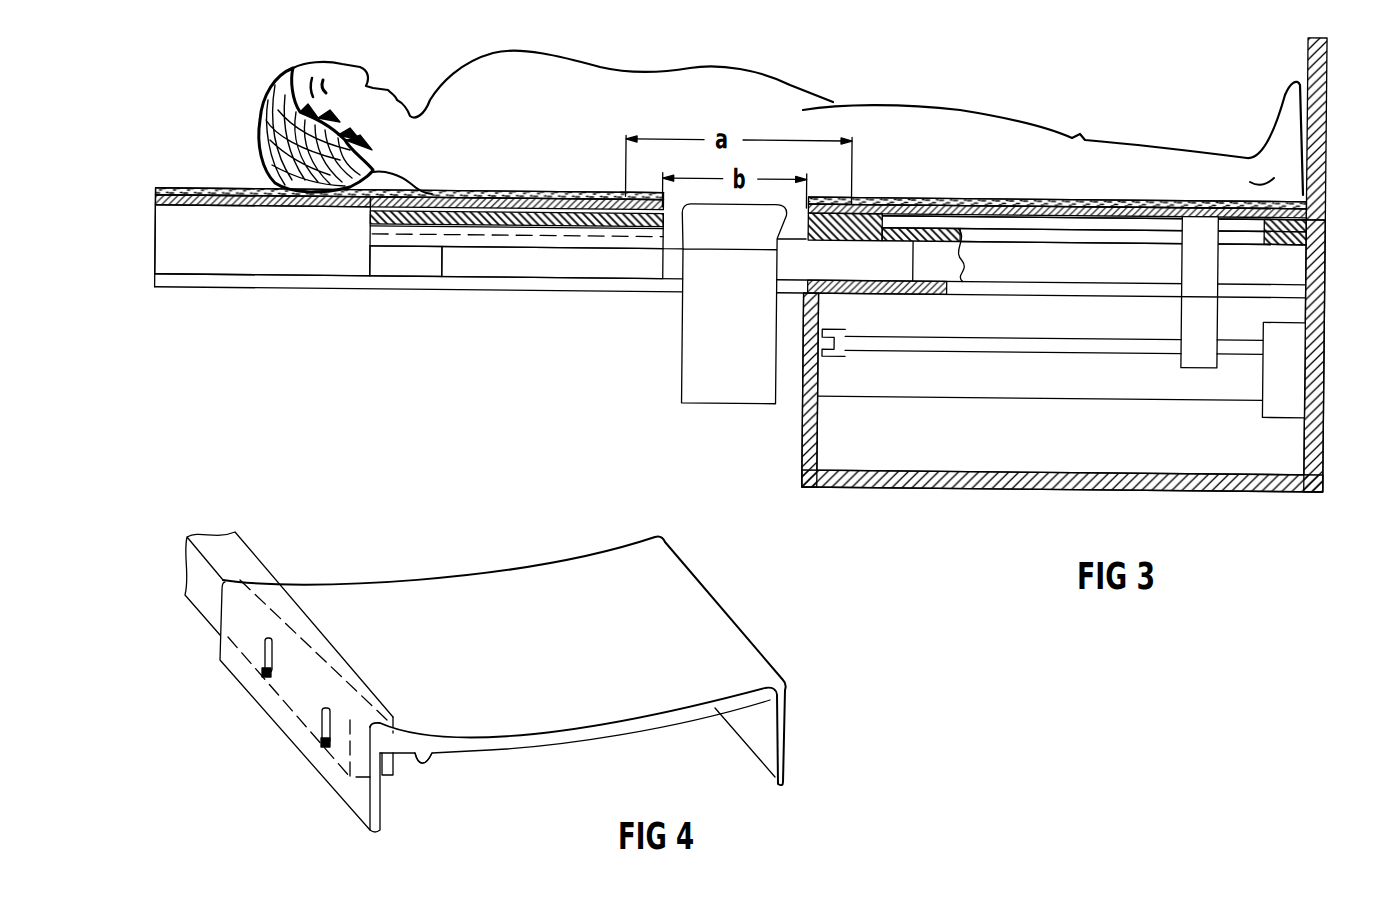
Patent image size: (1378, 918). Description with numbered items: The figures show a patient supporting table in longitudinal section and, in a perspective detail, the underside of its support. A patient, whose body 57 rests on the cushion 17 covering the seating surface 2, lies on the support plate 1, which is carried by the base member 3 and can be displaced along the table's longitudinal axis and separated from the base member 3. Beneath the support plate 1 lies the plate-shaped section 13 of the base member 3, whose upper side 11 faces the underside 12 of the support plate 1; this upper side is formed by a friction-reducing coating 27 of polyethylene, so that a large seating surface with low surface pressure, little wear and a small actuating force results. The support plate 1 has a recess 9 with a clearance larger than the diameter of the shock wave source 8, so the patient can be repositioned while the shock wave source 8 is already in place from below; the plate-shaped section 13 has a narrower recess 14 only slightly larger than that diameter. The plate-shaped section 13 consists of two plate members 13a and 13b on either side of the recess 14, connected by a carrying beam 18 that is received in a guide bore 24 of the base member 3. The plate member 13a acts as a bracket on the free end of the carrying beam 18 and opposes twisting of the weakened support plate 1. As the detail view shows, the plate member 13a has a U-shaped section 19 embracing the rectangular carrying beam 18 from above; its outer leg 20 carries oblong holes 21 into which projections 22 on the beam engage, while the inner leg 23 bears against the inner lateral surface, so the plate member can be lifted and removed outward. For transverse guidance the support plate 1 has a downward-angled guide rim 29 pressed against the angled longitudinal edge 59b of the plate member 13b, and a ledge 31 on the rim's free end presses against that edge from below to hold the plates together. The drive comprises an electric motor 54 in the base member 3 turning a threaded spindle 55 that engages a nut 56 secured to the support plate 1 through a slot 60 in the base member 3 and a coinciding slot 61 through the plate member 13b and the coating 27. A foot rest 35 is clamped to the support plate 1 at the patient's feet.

In FIG. 3, the support plate 1 is at (155, 204).
In FIG. 3, the seating surface 2 is at (191, 190).
In FIG. 3, the base member 3 is at (942, 484).
In FIG. 3, the shock wave source 8 is at (721, 405).
In FIG. 3, the recess 9 is at (849, 196).
In FIG. 3, the upper side 11 is at (636, 204).
In FIG. 3, the underside 12 is at (248, 212).
In FIG. 3, the plate-shaped section 13 is at (581, 206).
In FIG. 3, the plate member 13a is at (368, 221).
In FIG. 4, the plate member 13a is at (500, 587).
In FIG. 3, the plate member 13b is at (880, 195).
In FIG. 3, the recess 14 is at (673, 230).
In FIG. 3, the cushion 17 is at (219, 190).
In FIG. 3, the carrying beam 18 is at (558, 268).
In FIG. 4, the carrying beam 18 is at (237, 557).
In FIG. 4, the U-shaped section 19 is at (403, 750).
In FIG. 4, the outer leg 20 is at (347, 797).
In FIG. 4, the oblong holes 21 is at (263, 653).
In FIG. 4, the projections 22 is at (262, 675).
In FIG. 4, the inner leg 23 is at (433, 763).
In FIG. 3, the guide bore 24 is at (930, 290).
In FIG. 3, the friction-reducing coating 27 is at (533, 194).
In FIG. 3, the guide rim 29 is at (168, 242).
In FIG. 3, the ledge 31 is at (173, 285).
In FIG. 3, the foot rest 35 is at (1328, 84).
In FIG. 3, the electric motor 54 is at (1299, 357).
In FIG. 3, the threaded spindle 55 is at (1031, 344).
In FIG. 3, the nut 56 is at (1191, 353).
In FIG. 3, the body 57 is at (803, 87).
In FIG. 3, the longitudinal edge 59b is at (405, 271).
In FIG. 3, the slot 60 is at (1068, 234).
In FIG. 3, the slot 61 is at (1135, 223).